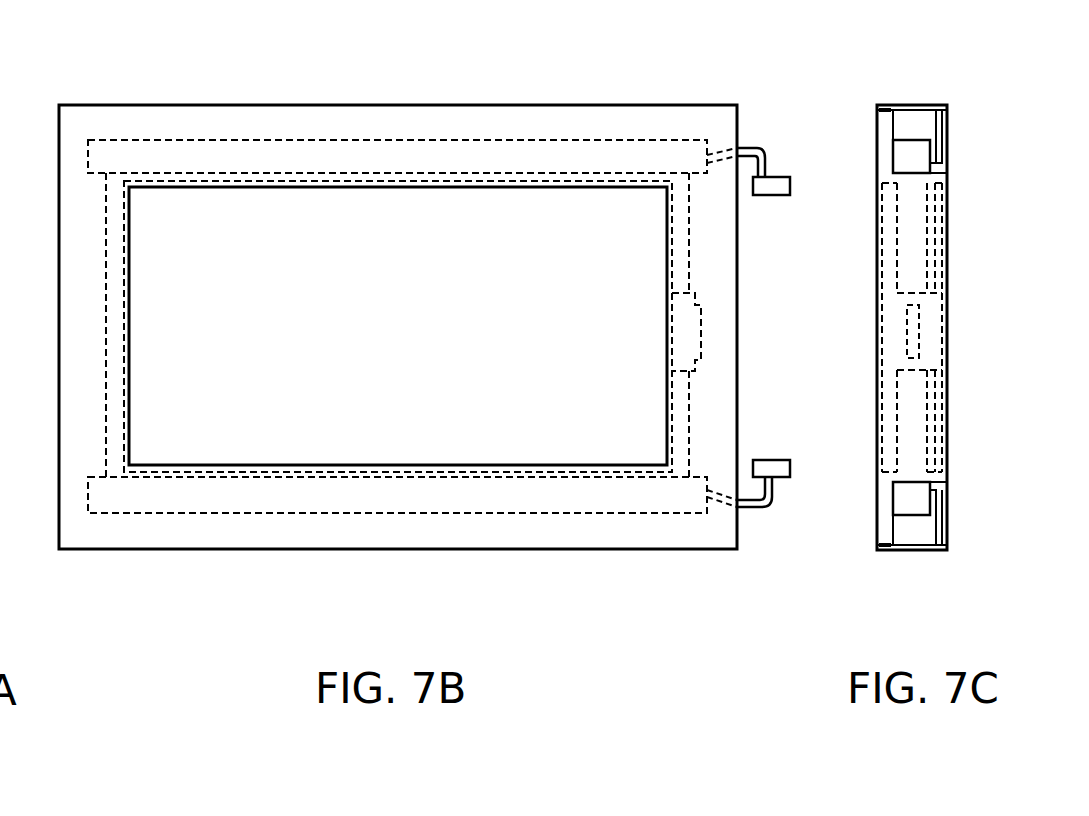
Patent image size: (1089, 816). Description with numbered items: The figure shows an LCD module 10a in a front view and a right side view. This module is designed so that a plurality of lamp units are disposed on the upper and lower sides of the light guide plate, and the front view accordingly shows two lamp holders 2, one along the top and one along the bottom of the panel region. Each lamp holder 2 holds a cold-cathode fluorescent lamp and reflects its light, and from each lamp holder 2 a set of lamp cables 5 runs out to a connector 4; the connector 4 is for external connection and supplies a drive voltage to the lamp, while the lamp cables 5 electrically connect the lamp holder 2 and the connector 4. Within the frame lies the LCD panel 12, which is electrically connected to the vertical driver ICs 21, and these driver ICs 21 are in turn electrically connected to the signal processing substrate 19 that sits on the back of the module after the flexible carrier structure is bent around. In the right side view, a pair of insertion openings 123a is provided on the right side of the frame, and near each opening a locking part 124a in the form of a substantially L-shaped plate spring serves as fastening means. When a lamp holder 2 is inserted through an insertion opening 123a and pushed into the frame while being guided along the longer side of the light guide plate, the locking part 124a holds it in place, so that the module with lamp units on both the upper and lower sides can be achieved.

In FIG. 7B, the LCD module 10a is at (764, 656).
In FIG. 7B, the lamp holder 2 is at (428, 140).
In FIG. 7B, the connector 4 is at (777, 186).
In FIG. 7B, the lamp cables 5 is at (745, 148).
In FIG. 7B, the LCD panel 12 is at (667, 251).
In FIG. 7C, the LCD panel 12 is at (877, 398).
In FIG. 7B, the vertical driver ICs 21 is at (700, 323).
In FIG. 7C, the vertical driver ICs 21 is at (913, 323).
In FIG. 7C, the signal processing substrate 19 is at (947, 398).
In FIG. 7C, the insertion openings 123a is at (912, 155).
In FIG. 7C, the locking parts 124a is at (943, 148).